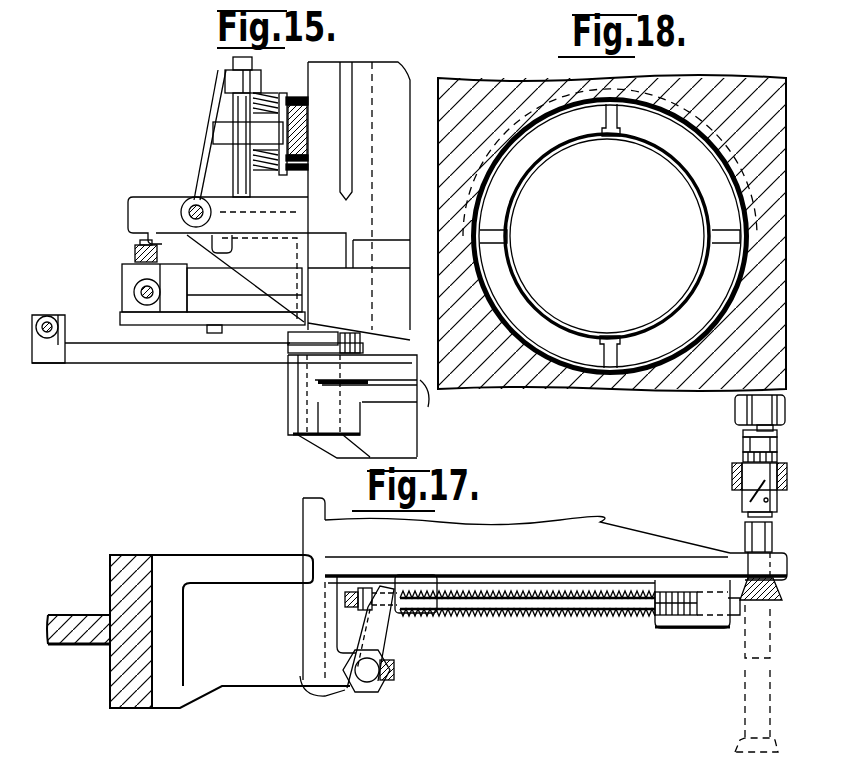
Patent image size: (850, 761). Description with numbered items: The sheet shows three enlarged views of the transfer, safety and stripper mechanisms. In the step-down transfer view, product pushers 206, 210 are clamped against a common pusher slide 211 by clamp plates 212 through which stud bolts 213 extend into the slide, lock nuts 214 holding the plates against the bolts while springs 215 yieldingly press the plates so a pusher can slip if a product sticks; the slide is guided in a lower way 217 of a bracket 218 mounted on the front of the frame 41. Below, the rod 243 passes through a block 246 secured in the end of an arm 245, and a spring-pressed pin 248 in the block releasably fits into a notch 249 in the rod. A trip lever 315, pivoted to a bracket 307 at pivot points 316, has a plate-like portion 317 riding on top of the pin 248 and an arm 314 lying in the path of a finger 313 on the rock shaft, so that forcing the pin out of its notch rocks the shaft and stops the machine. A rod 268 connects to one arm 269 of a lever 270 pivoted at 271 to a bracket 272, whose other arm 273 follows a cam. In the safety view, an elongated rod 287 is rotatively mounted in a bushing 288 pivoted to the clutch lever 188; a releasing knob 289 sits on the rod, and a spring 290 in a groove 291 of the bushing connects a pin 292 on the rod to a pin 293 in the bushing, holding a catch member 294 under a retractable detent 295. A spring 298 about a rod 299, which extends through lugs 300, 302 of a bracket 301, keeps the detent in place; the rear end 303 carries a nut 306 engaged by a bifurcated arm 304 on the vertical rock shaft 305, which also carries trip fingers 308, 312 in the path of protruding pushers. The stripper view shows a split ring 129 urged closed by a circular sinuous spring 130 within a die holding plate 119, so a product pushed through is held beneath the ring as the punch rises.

In FIG. 15, the finger 313 is at (233, 63).
In FIG. 15, the arm 314 is at (228, 86).
In FIG. 15, the trip finger 312 is at (220, 130).
In FIG. 15, the pivot points 316 is at (196, 197).
In FIG. 15, the trip lever 315 is at (182, 176).
In FIG. 15, the plate-like portion 317 is at (140, 230).
In FIG. 15, the spring-pressed pin 248 is at (135, 243).
In FIG. 15, the block 246 is at (125, 270).
In FIG. 15, the rod 243 is at (128, 293).
In FIG. 15, the arm 245 is at (162, 318).
In FIG. 15, the notch 249 is at (187, 292).
In FIG. 15, the bracket 307 is at (288, 283).
In FIG. 15, the bracket 218 is at (359, 304).
In FIG. 17, the bracket 218 is at (284, 548).
In FIG. 15, the rod 268 is at (52, 338).
In FIG. 15, the arm 269 is at (187, 354).
In FIG. 15, the pivot 271 is at (305, 352).
In FIG. 15, the lever 270 is at (296, 372).
In FIG. 15, the bracket 272 is at (292, 426).
In FIG. 15, the arm 273 is at (429, 392).
In FIG. 15, the clamp plates 212 is at (290, 93).
In FIG. 15, the stud bolts 213 is at (292, 100).
In FIG. 15, the product pusher 210 is at (306, 122).
In FIG. 15, the pusher slide 211 is at (326, 147).
In FIG. 15, the springs 215 is at (296, 176).
In FIG. 15, the lock nuts 214 is at (258, 172).
In FIG. 15, the way 217 is at (347, 224).
In FIG. 18, the split ring 129 is at (698, 176).
In FIG. 18, the circular sinuous spring 130 is at (720, 186).
In FIG. 18, the die holding plate 119 is at (530, 384).
In FIG. 17, the frame 41 is at (122, 565).
In FIG. 17, the product pusher 206 is at (303, 510).
In FIG. 17, the bracket 301 is at (600, 514).
In FIG. 17, the rear end 303 is at (346, 600).
In FIG. 17, the nut 306 is at (362, 612).
In FIG. 17, the lug 302 is at (418, 600).
In FIG. 17, the arm 304 is at (380, 637).
In FIG. 17, the rock shaft 305 is at (392, 678).
In FIG. 17, the trip finger 308 is at (328, 698).
In FIG. 17, the rod 299 is at (546, 614).
In FIG. 17, the spring 298 is at (622, 616).
In FIG. 17, the lug 300 is at (660, 617).
In FIG. 17, the retractable detent 295 is at (737, 610).
In FIG. 17, the catch member 294 is at (760, 602).
In FIG. 17, the rod 287 is at (750, 537).
In FIG. 17, the bushing 288 is at (756, 492).
In FIG. 17, the pin 293 is at (740, 489).
In FIG. 17, the clutch lever 188 is at (735, 466).
In FIG. 17, the groove 291 is at (742, 458).
In FIG. 17, the spring 290 is at (742, 446).
In FIG. 17, the pin 292 is at (742, 435).
In FIG. 17, the releasing knob 289 is at (740, 413).